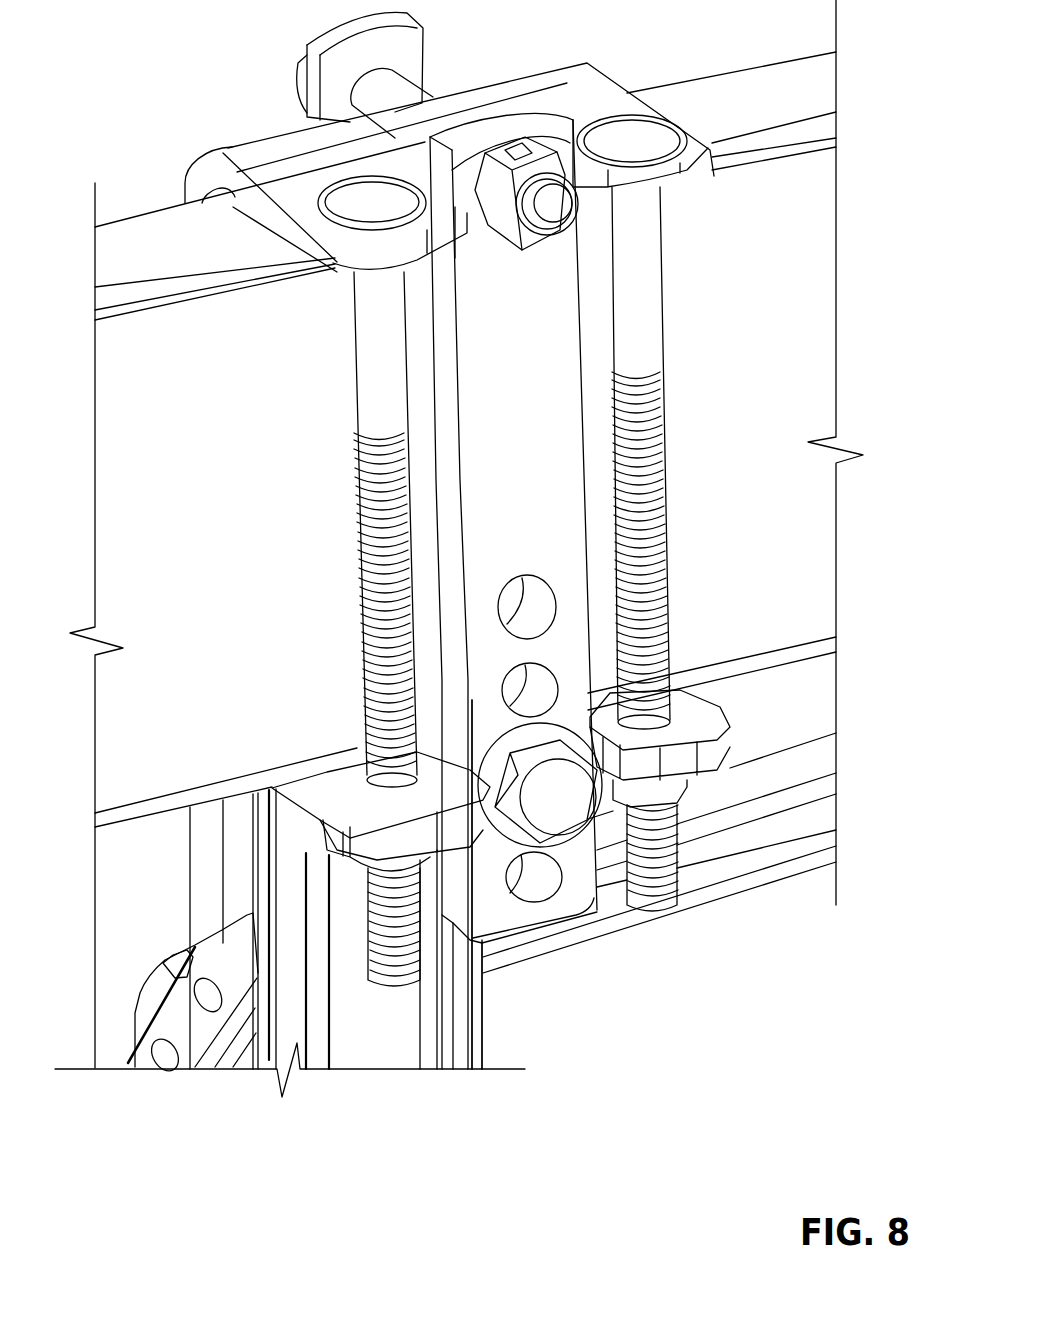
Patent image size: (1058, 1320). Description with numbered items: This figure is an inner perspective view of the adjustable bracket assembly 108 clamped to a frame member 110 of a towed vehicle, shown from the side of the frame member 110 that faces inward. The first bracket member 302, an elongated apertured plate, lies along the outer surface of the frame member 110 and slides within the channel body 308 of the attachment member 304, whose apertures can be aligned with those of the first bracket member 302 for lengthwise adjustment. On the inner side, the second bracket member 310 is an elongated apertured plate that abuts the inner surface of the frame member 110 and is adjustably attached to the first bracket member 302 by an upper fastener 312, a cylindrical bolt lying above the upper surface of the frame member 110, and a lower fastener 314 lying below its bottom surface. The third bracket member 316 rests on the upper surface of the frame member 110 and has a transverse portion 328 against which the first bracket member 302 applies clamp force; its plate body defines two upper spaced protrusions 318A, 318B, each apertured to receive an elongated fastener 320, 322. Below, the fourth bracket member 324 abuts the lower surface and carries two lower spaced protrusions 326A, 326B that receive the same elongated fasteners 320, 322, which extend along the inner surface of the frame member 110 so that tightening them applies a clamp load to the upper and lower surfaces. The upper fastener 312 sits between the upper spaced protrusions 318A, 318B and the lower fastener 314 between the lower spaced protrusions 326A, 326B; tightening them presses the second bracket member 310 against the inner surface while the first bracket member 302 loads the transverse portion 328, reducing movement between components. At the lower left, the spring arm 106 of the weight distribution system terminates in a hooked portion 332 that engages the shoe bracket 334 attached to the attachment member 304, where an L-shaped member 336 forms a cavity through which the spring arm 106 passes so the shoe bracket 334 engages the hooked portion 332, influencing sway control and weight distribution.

The spring arm 106 is at (827, 750).
The adjustable bracket assembly 108 is at (595, 65).
The frame member 110 is at (110, 225).
The first bracket member 302 is at (310, 38).
The attachment member 304 is at (483, 1043).
The channel body 308 is at (403, 1028).
The second bracket member 310 is at (497, 113).
The upper fastener 312 is at (403, 100).
The lower fastener 314 is at (567, 810).
The third bracket member 316 is at (208, 145).
The upper spaced protrusion 318A is at (697, 200).
The upper spaced protrusion 318B is at (337, 263).
The elongated fastener 320 is at (658, 330).
The elongated fastener 322 is at (355, 383).
The fourth bracket member 324 is at (688, 707).
The lower spaced protrusion 326A is at (713, 712).
The lower spaced protrusion 326B is at (330, 768).
The transverse portion 328 is at (190, 190).
The hooked portion 332 is at (220, 940).
The shoe bracket 334 is at (147, 990).
The L-shaped member 336 is at (205, 897).